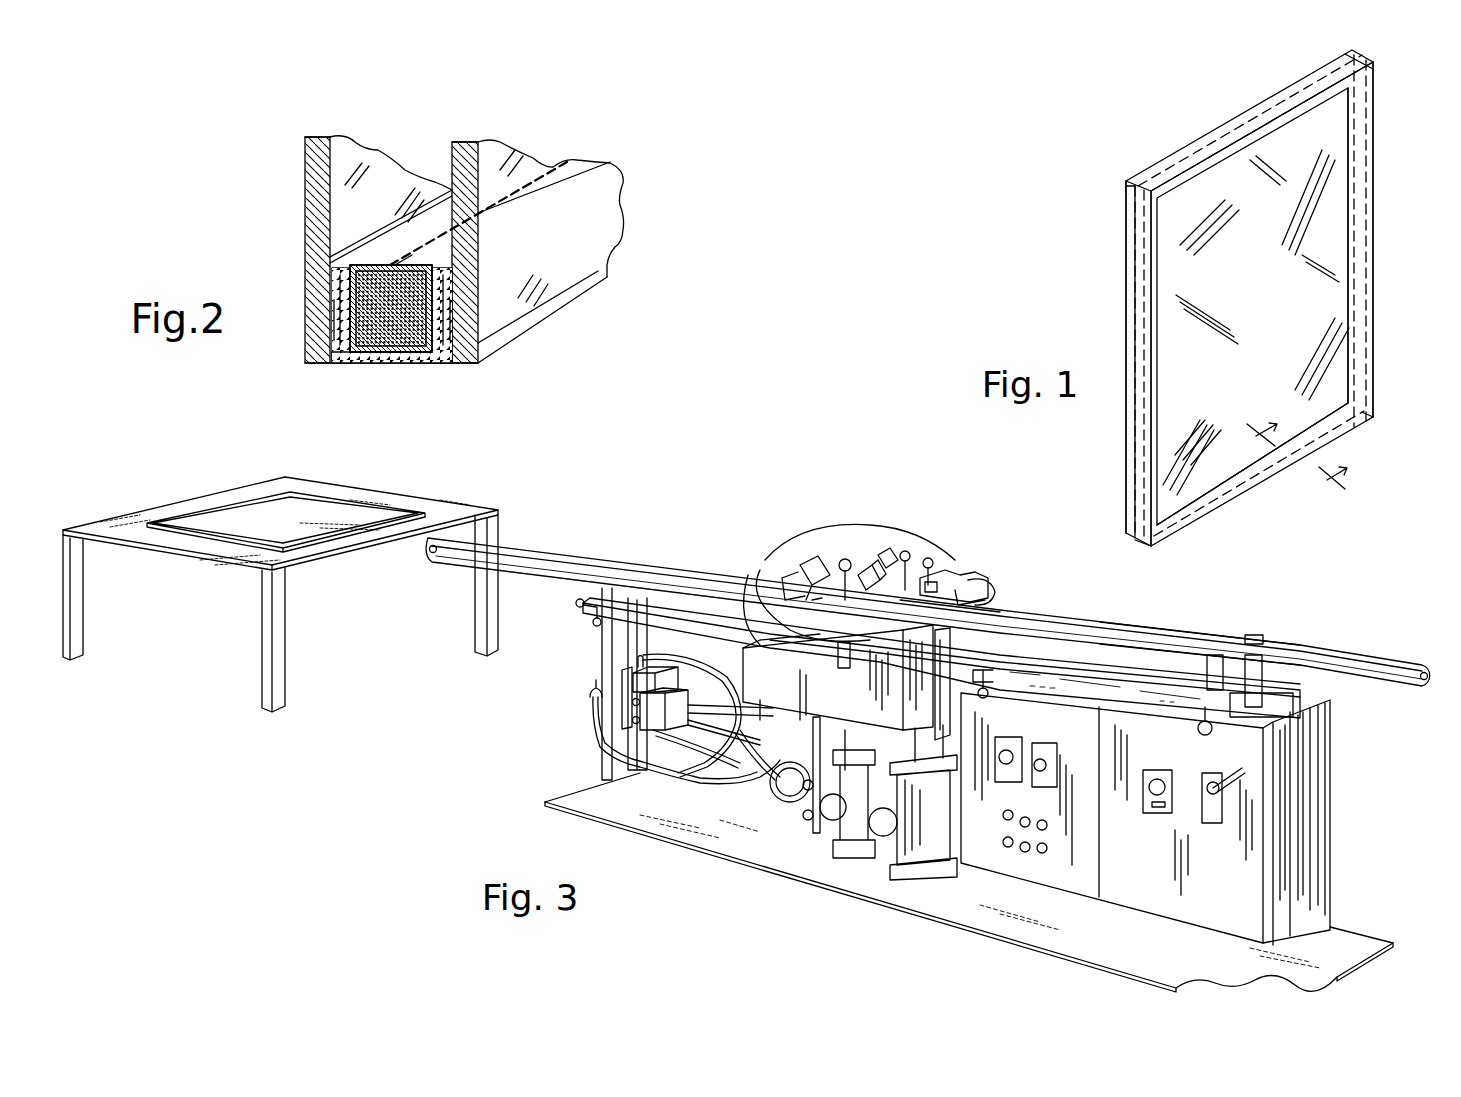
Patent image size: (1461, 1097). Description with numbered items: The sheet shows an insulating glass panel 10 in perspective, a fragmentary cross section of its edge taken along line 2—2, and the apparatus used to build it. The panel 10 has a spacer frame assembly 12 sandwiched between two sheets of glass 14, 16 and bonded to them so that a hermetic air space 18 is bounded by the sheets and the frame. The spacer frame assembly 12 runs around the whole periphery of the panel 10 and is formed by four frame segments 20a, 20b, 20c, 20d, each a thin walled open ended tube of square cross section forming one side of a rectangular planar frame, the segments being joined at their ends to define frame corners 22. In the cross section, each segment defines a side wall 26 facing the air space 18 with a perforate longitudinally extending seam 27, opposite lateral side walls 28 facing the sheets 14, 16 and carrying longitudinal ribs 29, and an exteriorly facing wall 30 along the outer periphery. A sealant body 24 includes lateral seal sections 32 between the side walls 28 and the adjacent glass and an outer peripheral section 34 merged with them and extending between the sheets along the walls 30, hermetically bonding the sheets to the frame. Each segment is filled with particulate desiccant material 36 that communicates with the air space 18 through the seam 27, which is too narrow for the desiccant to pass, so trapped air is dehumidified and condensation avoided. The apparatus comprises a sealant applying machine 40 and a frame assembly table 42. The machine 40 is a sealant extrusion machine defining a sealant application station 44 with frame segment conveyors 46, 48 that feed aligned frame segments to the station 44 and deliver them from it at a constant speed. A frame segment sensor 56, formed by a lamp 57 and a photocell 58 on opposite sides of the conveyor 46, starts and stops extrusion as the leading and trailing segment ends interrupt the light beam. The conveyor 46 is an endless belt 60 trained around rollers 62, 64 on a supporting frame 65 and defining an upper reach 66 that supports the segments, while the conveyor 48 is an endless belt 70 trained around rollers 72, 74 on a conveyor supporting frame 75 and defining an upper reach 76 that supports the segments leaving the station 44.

In FIG. 2, the insulating glass panel 10 is at (556, 357).
In FIG. 1, the insulating glass panel 10 is at (1132, 138).
In FIG. 2, the spacer frame assembly 12 is at (384, 368).
In FIG. 1, the spacer frame assembly 12 is at (1376, 155).
In FIG. 2, the sheet of glass 14 is at (502, 348).
In FIG. 1, the sheet of glass 14 is at (1358, 426).
In FIG. 2, the sheet of glass 16 is at (305, 350).
In FIG. 1, the sheet of glass 16 is at (1125, 483).
In FIG. 2, the hermetic air space 18 is at (400, 165).
In FIG. 1, the hermetic air space 18 is at (1306, 338).
In FIG. 2, the frame segment 20a is at (632, 183).
In FIG. 1, the frame segment 20a is at (1207, 496).
In FIG. 1, the frame segment 20b is at (1366, 250).
In FIG. 1, the frame segment 20c is at (1256, 138).
In FIG. 1, the frame segment 20d is at (1148, 310).
In FIG. 1, the frame corner 22 is at (1362, 54).
In FIG. 2, the sealant body 24 is at (430, 368).
In FIG. 1, the sealant body 24 is at (1125, 447).
In FIG. 2, the side wall 26 is at (346, 268).
In FIG. 2, the perforate longitudinally extending seam 27 is at (408, 253).
In FIG. 1, the perforate longitudinally extending seam 27 is at (1236, 478).
In FIG. 2, the lateral side wall 28 is at (332, 282).
In FIG. 2, the longitudinally extending rib 29 is at (341, 312).
In FIG. 2, the exteriorly facing wall 30 is at (342, 363).
In FIG. 2, the lateral seal section 32 is at (332, 326).
In FIG. 2, the outer peripheral section 34 is at (360, 364).
In FIG. 2, the particulate desiccant material 36 is at (458, 228).
In FIG. 1, the line 2— 2 is at (1308, 440).
In FIG. 3, the sealant applying machine 40 is at (892, 908).
In FIG. 3, the frame assembly table 42 is at (205, 645).
In FIG. 3, the sealant application station 44 is at (780, 565).
In FIG. 3, the frame segment conveyor 46 is at (1254, 635).
In FIG. 3, the frame segment conveyor 48 is at (531, 542).
In FIG. 3, the frame segment sensor 56 is at (915, 560).
In FIG. 3, the lamp 57 is at (975, 606).
In FIG. 3, the photocell 58 is at (945, 585).
In FIG. 3, the endless belt 60 is at (1322, 648).
In FIG. 3, the roller 62 is at (1428, 690).
In FIG. 3, the roller 64 is at (846, 600).
In FIG. 3, the supporting frame 65 is at (1342, 678).
In FIG. 3, the upper reach 66 is at (1083, 620).
In FIG. 3, the endless belt 70 is at (586, 553).
In FIG. 3, the roller 72 is at (430, 550).
In FIG. 3, the roller 74 is at (780, 620).
In FIG. 3, the conveyor supporting frame 75 is at (556, 561).
In FIG. 3, the upper reach 76 is at (650, 564).